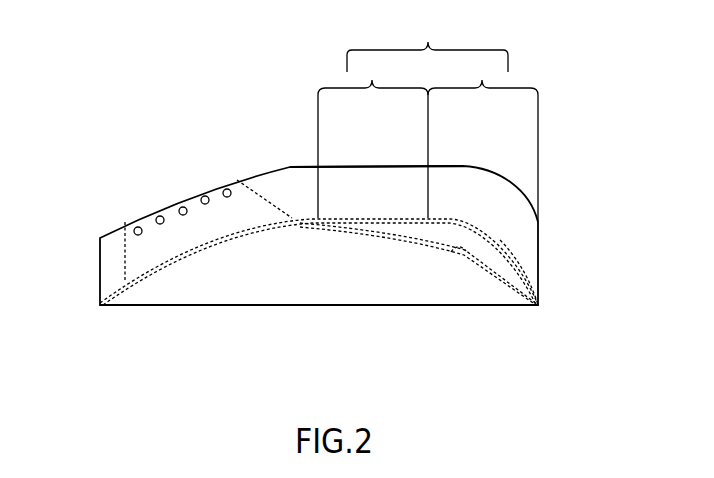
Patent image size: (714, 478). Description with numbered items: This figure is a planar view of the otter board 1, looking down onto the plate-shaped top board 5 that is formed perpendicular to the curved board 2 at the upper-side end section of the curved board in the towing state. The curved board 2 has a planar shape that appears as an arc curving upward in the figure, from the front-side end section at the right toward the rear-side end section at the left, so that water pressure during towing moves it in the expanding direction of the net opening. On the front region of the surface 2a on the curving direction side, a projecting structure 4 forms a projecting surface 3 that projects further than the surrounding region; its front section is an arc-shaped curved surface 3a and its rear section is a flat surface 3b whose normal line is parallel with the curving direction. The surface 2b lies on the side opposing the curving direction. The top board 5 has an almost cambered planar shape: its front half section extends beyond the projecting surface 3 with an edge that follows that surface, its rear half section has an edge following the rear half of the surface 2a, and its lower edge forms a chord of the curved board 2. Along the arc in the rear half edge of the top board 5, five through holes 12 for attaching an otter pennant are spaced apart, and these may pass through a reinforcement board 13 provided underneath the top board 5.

The otter board 1 is at (140, 127).
The curved board 2 is at (332, 225).
The surface on the curving direction side 2a is at (465, 258).
The surface on the side opposing the curving direction 2b is at (497, 283).
The projecting surface 3 is at (437, 33).
The curved surface 3a is at (483, 140).
The flat surface 3b is at (373, 138).
The projecting structure 4 is at (533, 272).
The top board 5 is at (372, 166).
The through holes 12 is at (181, 208).
The reinforcement board 13 is at (268, 201).